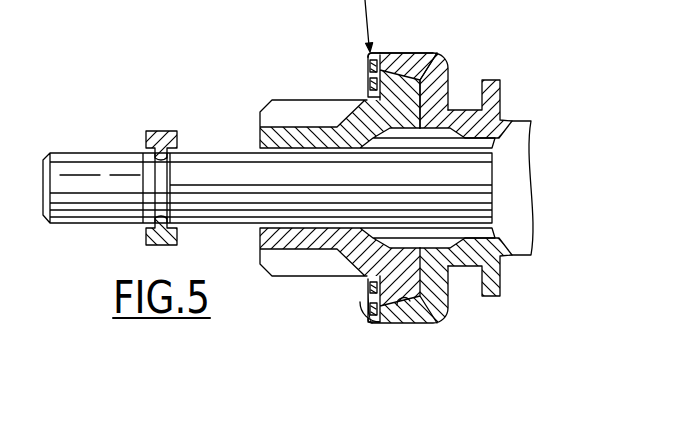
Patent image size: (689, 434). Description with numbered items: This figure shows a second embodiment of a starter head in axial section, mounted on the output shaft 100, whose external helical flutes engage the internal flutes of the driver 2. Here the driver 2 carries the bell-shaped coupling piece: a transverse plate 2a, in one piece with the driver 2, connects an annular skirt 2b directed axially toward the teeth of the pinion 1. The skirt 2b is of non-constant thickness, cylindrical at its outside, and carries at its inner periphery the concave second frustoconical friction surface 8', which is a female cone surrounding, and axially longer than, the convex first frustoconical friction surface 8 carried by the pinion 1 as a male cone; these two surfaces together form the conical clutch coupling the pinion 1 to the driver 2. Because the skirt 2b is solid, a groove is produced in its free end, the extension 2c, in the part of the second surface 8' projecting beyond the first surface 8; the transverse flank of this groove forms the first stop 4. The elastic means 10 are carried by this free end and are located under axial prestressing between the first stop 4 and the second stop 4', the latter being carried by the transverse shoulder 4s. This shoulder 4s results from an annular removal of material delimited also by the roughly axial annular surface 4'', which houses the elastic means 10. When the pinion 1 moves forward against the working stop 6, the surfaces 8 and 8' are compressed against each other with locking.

The pinion 1 is at (303, 115).
The driver 2 is at (447, 54).
The plate 2a is at (448, 80).
The skirt 2b is at (389, 53).
The extension 2c is at (367, 56).
The first stop 4 is at (374, 337).
The second stop 4' is at (342, 301).
The annular surface 4'' is at (311, 73).
The transverse shoulder 4s is at (378, 312).
The working stop 6 is at (165, 130).
The first frustoconical friction surface 8 is at (443, 64).
The second frustoconical friction surface 8' is at (435, 328).
The elastic means 10 is at (362, 78).
The output shaft 100 is at (503, 197).